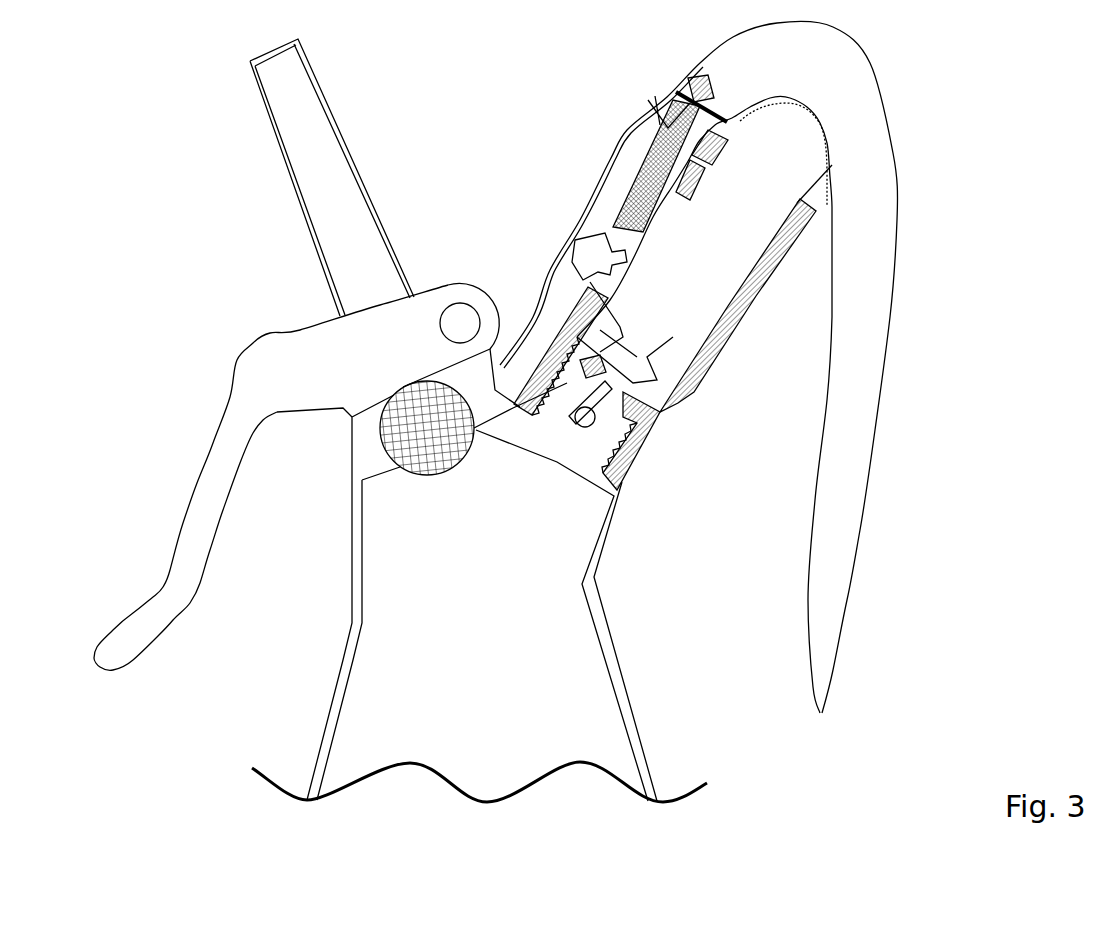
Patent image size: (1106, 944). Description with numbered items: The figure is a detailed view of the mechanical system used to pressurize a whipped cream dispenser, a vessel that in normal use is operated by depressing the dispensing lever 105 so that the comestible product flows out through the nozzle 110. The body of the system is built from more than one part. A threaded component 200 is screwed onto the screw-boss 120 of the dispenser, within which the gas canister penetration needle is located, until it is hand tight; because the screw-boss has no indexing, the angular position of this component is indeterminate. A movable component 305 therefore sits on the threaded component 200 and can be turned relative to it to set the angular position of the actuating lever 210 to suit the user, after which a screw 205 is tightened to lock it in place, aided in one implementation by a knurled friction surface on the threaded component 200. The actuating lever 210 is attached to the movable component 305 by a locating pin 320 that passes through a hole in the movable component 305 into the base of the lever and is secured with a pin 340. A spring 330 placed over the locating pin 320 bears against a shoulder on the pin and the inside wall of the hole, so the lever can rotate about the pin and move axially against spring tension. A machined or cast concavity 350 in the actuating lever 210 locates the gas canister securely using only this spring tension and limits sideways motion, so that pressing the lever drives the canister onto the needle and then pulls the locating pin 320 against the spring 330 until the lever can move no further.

The dispensing lever 105 is at (238, 393).
The nozzle 110 is at (308, 181).
The screw-boss 120 is at (603, 461).
The threaded component 200 is at (803, 215).
The screw 205 is at (582, 261).
The actuating lever 210 is at (835, 537).
The movable component 305 is at (705, 353).
The locating pin 320 is at (620, 211).
The spring 330 is at (637, 171).
The pin 340 is at (684, 96).
The concavity 350 is at (812, 108).